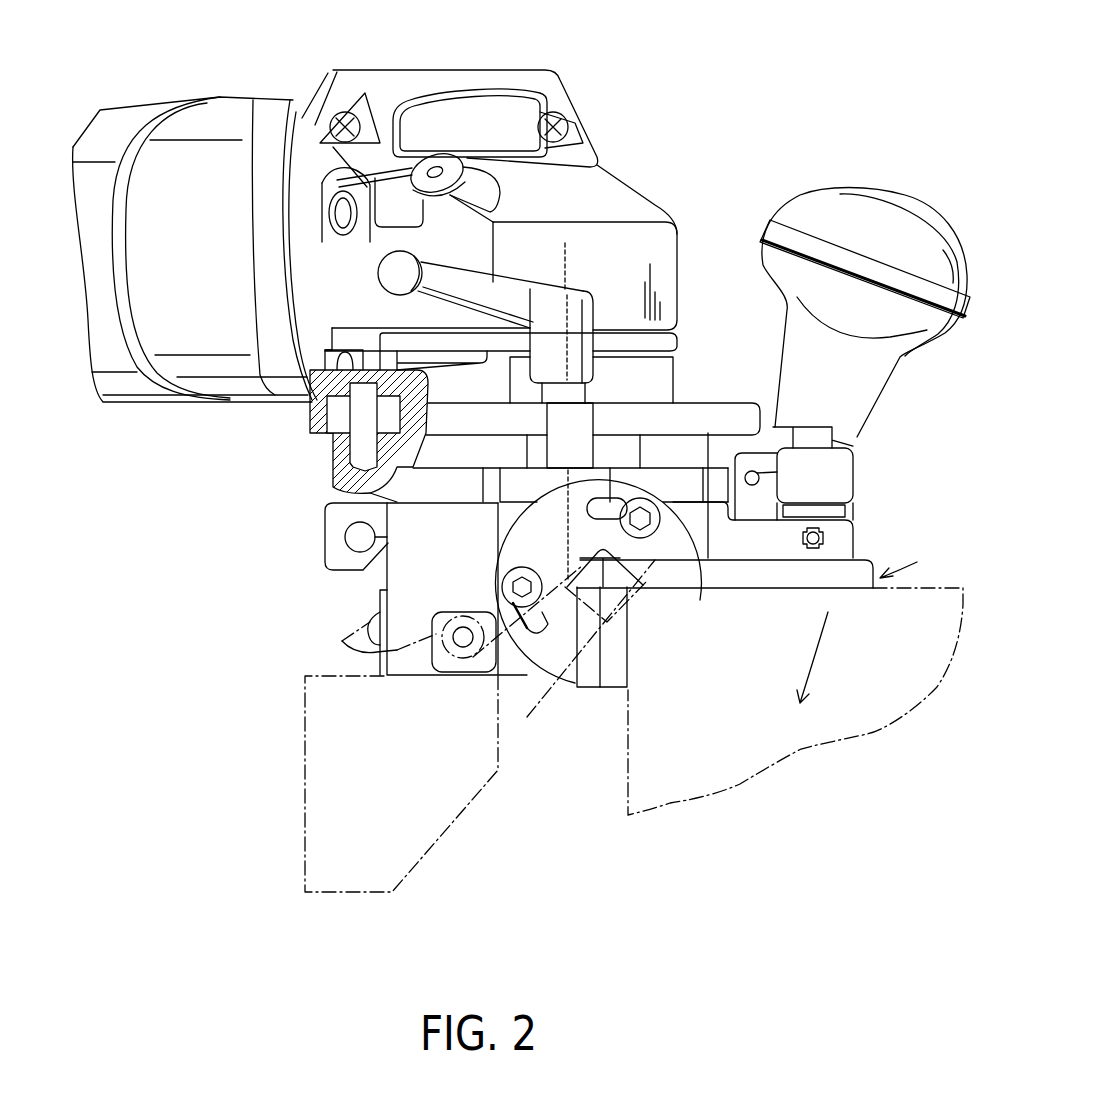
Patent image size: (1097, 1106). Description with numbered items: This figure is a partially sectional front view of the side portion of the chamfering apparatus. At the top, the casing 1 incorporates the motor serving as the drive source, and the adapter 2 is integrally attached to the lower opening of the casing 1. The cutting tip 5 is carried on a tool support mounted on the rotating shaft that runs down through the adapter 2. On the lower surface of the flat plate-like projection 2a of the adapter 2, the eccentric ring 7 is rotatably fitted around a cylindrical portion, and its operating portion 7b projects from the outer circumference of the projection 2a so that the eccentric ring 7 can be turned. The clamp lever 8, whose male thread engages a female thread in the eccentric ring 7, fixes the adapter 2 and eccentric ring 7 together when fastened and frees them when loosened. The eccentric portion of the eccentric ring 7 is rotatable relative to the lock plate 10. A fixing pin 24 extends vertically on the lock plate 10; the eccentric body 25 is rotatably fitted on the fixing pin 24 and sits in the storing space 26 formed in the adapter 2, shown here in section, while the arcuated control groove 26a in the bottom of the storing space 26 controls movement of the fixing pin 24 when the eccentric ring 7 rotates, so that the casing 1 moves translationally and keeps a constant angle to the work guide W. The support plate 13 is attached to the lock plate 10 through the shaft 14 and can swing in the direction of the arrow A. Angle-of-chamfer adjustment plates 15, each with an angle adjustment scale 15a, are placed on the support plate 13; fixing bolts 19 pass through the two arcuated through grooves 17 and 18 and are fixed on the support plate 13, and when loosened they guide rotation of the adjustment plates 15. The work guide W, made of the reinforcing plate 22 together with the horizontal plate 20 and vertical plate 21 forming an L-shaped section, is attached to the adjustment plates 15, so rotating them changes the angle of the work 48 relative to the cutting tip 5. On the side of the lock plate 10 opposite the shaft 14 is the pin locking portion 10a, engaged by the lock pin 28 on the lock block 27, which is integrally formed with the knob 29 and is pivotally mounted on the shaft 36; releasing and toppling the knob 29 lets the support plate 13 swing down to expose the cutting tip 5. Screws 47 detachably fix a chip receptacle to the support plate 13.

The casing 1 is at (203, 163).
The adapter 2 is at (655, 437).
The projection 2a is at (710, 413).
The cutting tip 5 is at (620, 603).
The eccentric ring 7 is at (672, 398).
The operating portion 7b is at (573, 427).
The clamp lever 8 is at (580, 317).
The lock plate 10 is at (702, 490).
The pin locking portion 10a is at (773, 490).
The support plate 13 is at (417, 540).
The shaft 14 is at (345, 537).
The angle-of-chamfer adjustment plate 15 is at (545, 547).
The angle adjustment scale 15a is at (530, 536).
The arcuated through groove 17 is at (538, 633).
The arcuated through groove 18 is at (600, 523).
The fixing bolt 19 is at (650, 527).
The horizontal plate 20 is at (857, 580).
The vertical plate 21 is at (617, 672).
The reinforcing plate 22 is at (588, 680).
The fixing pin 24 is at (362, 447).
The eccentric body 25 is at (330, 407).
The storing space 26 is at (320, 403).
The control groove 26a is at (384, 385).
The lock block 27 is at (855, 452).
The lock pin 28 is at (758, 474).
The knob 29 is at (893, 230).
The shaft 36 is at (323, 752).
The screw 47 is at (403, 642).
The work 48 is at (900, 696).
The work guide W is at (912, 558).
The direction of swing A is at (820, 657).